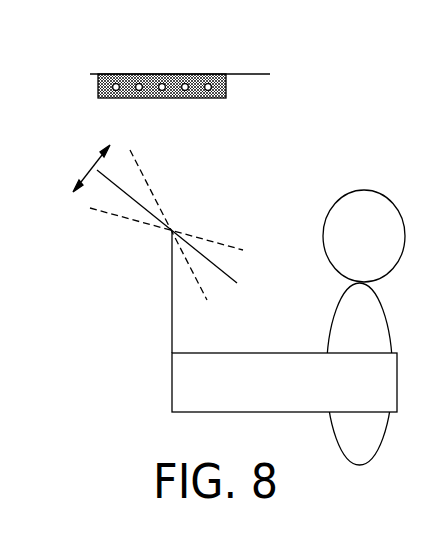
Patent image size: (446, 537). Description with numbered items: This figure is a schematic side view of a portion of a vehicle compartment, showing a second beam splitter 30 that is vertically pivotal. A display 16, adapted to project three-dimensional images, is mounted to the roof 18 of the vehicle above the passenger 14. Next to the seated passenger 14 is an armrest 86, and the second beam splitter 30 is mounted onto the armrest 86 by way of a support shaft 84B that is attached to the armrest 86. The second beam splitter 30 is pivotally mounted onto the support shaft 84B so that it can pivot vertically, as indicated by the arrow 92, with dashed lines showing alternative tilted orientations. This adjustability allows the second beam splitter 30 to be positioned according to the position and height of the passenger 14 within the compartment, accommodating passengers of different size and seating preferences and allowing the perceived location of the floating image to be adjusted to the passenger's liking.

The passenger 14 is at (376, 338).
The display 16 is at (174, 86).
The roof 18 is at (253, 75).
The second beam splitter 30 is at (112, 182).
The support shaft 84B is at (172, 298).
The armrest 86 is at (297, 396).
The arrow 92 is at (91, 163).